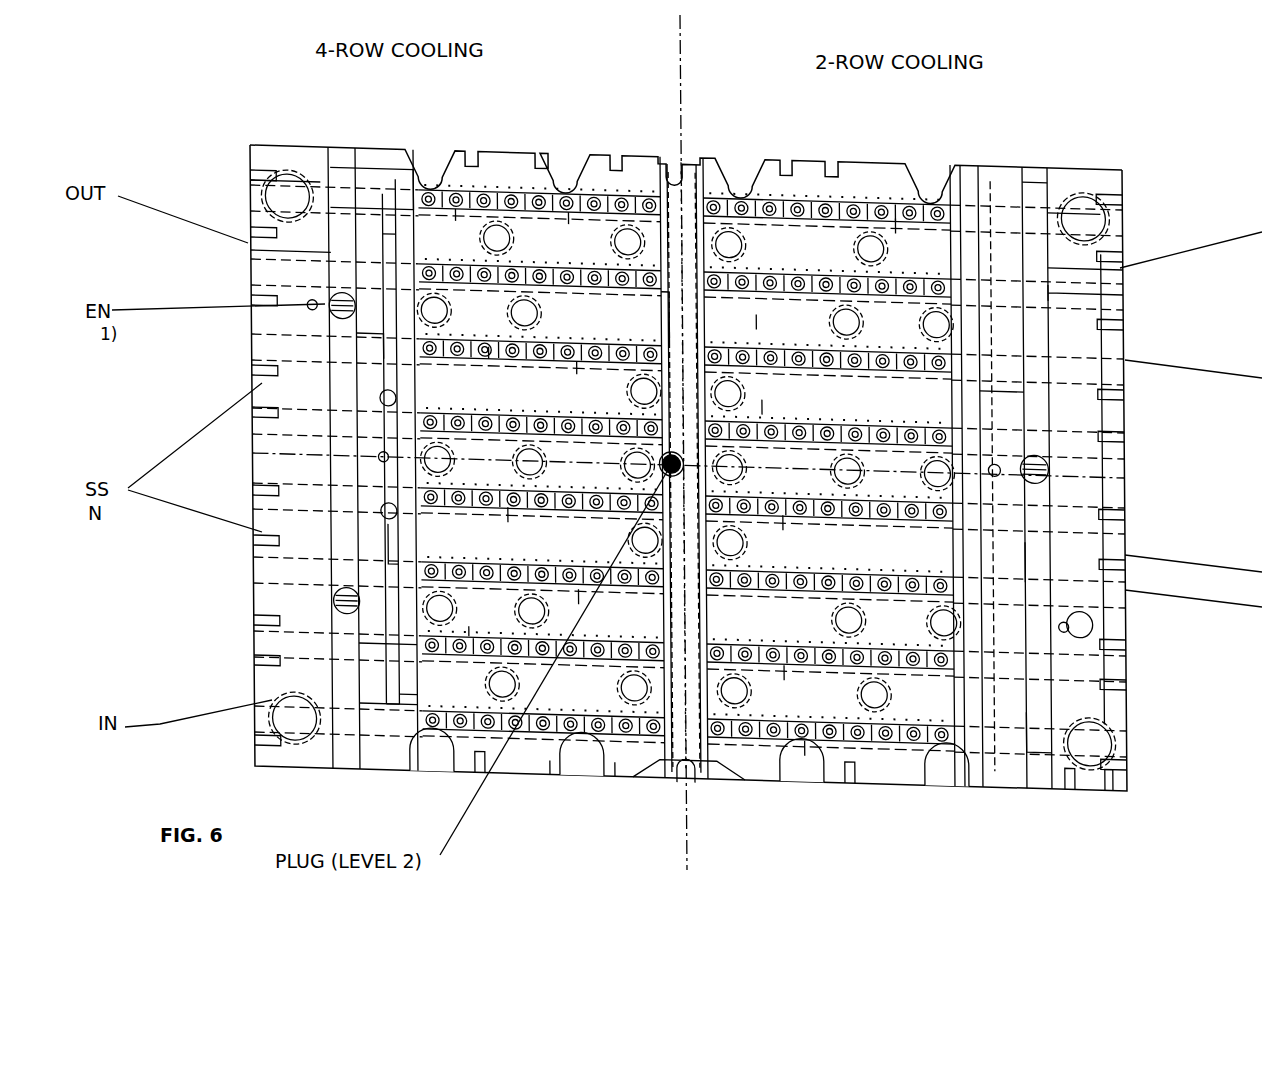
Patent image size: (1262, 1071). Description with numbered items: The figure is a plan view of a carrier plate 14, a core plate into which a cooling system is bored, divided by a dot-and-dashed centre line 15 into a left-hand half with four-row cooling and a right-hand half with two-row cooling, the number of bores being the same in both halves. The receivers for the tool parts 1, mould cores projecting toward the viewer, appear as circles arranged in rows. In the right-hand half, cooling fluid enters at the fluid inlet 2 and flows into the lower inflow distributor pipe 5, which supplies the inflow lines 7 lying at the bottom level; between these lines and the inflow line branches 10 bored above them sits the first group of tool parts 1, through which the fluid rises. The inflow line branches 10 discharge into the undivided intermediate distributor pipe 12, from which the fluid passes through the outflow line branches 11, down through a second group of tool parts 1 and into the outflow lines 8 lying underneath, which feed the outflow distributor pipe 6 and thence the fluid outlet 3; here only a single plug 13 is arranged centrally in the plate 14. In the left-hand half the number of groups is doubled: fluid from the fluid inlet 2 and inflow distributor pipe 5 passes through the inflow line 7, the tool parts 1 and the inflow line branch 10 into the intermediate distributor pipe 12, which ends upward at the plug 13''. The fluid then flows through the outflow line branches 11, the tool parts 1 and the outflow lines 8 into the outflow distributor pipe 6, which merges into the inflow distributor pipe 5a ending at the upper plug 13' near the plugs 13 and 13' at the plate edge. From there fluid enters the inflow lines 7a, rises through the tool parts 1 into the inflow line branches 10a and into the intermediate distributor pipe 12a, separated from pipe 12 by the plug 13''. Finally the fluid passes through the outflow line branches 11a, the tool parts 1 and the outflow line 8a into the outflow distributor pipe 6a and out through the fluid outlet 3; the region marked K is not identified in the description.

The tool part 1 is at (466, 625).
The fluid inlet 2 is at (262, 660).
The fluid outlet 3 is at (248, 215).
The inflow distributor pipe 5 is at (368, 700).
The inflow distributor pipe 5a is at (355, 355).
The outflow distributor pipe 6 is at (1016, 195).
The outflow distributor pipe 6a is at (342, 218).
The inflow line 7 is at (1056, 495).
The inflow line 7a is at (572, 352).
The outflow line 8 is at (505, 500).
The outflow line 8a is at (455, 212).
The inflow line branch 10 is at (810, 545).
The inflow line branch 10a is at (486, 345).
The outflow line branch 11 is at (570, 575).
The outflow line branch 11a is at (568, 215).
The intermediate distributor pipe 12 is at (688, 220).
The intermediate distributor pipe 12a is at (671, 317).
The plug 13 is at (665, 473).
The plug 13' is at (253, 297).
The plug 13'' is at (552, 639).
The carrier plate 14 is at (1118, 205).
The centre line 15 is at (688, 840).
The channel K is at (1022, 415).